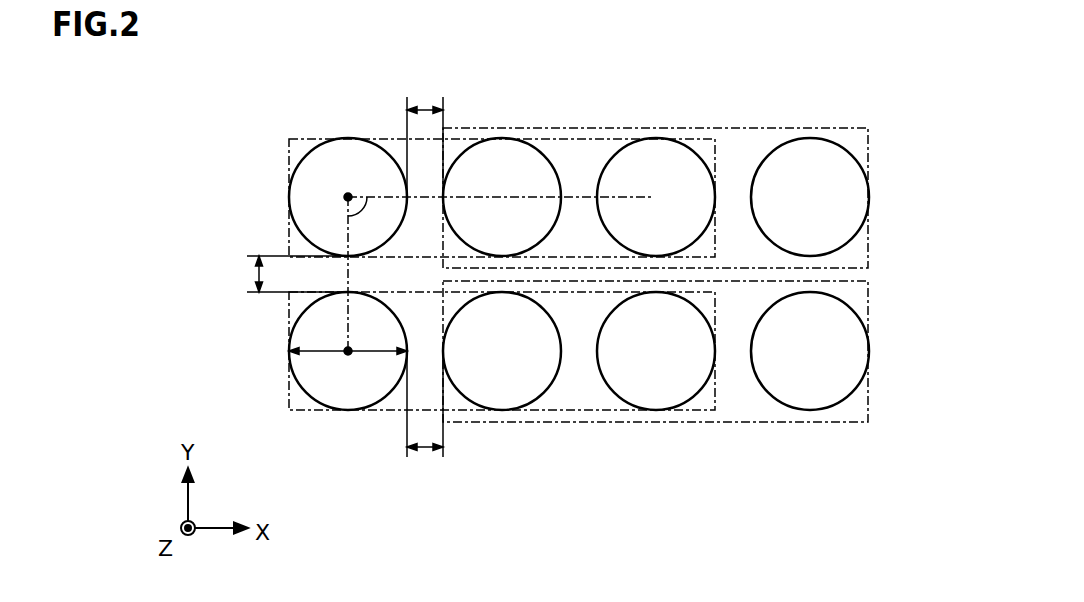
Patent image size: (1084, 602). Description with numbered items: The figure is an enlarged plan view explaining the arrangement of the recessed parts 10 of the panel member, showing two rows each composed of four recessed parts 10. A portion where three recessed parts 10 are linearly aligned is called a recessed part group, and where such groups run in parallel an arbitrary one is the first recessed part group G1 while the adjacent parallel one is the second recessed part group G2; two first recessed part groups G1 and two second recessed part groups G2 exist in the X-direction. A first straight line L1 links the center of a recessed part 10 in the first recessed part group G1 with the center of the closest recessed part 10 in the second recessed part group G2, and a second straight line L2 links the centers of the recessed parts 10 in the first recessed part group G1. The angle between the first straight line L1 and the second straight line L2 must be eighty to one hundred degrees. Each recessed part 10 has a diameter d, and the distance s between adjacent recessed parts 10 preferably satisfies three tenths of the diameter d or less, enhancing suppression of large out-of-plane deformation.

The recessed part 10 is at (305, 157).
The first recessed part group G1 is at (315, 139).
The second recessed part group G2 is at (315, 411).
The first straight line L1 is at (348, 237).
The second straight line L2 is at (382, 197).
The diameter of the recessed part d is at (348, 339).
The distance between the recessed parts s is at (338, 268).